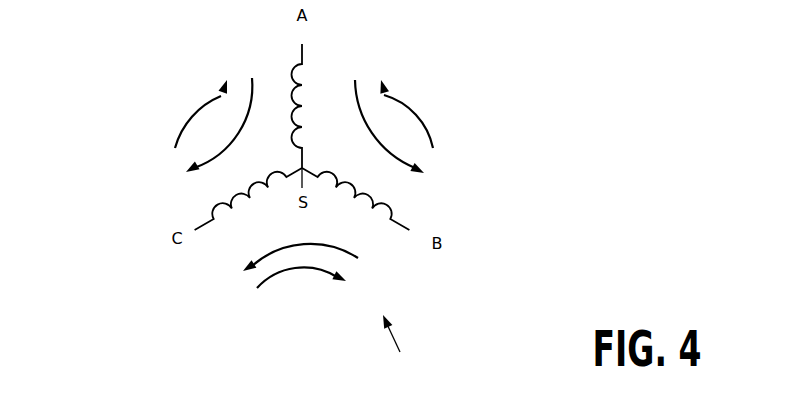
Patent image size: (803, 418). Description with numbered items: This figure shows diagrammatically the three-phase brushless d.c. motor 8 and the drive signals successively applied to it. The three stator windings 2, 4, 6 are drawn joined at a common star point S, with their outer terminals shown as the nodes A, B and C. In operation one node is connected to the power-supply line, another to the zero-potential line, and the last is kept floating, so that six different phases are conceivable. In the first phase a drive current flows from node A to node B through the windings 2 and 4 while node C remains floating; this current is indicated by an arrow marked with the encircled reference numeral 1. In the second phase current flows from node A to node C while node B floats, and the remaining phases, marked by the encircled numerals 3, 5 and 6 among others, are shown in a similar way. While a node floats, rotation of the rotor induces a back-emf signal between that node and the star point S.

The arrangement for supplying drive signals 1 is at (363, 117).
The winding 2 is at (291, 118).
The third rotation direction arrow 3 is at (318, 245).
The winding 4 is at (357, 183).
The fifth rotation direction arrow 5 is at (216, 113).
The winding 6 is at (252, 180).
The three-phase brushless d.c. motor 8 is at (399, 349).